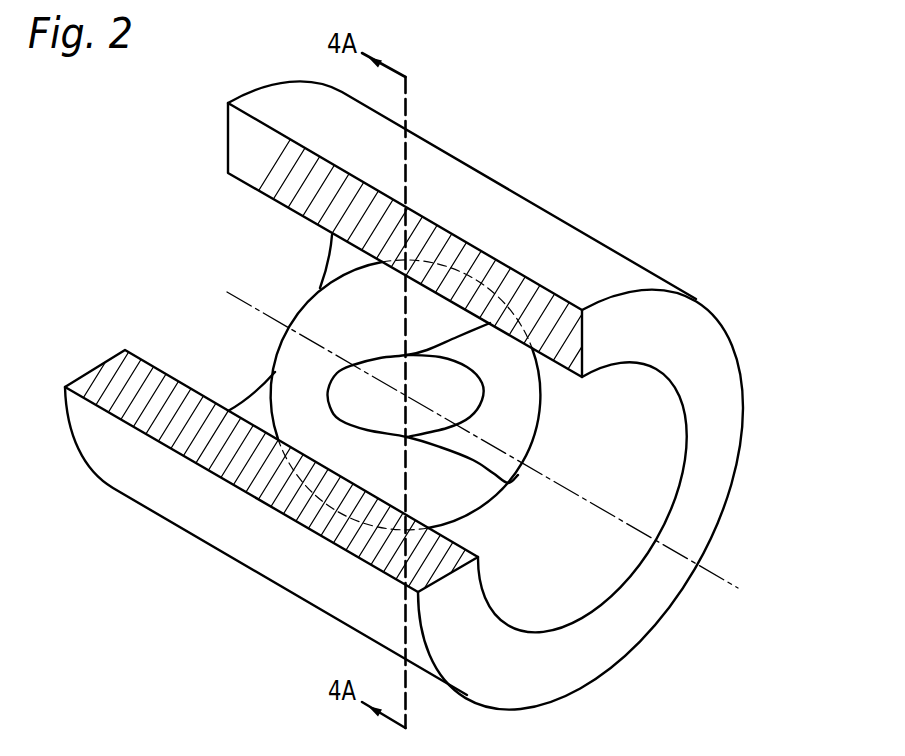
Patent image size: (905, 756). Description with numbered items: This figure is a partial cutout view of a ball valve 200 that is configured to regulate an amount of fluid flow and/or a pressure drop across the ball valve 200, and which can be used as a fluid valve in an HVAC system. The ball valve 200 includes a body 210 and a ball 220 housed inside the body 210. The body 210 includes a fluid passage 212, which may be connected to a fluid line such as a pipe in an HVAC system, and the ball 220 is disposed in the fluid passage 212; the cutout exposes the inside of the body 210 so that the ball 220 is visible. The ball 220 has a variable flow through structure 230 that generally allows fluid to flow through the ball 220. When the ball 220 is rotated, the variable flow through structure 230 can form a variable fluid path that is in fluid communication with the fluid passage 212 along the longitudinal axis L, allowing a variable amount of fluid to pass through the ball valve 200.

The ball valve 200 is at (658, 142).
The body 210 is at (592, 265).
The fluid passage 212 is at (158, 345).
The ball 220 is at (303, 293).
The variable flow through structure 230 is at (372, 403).
The longitudinal axis L is at (493, 451).